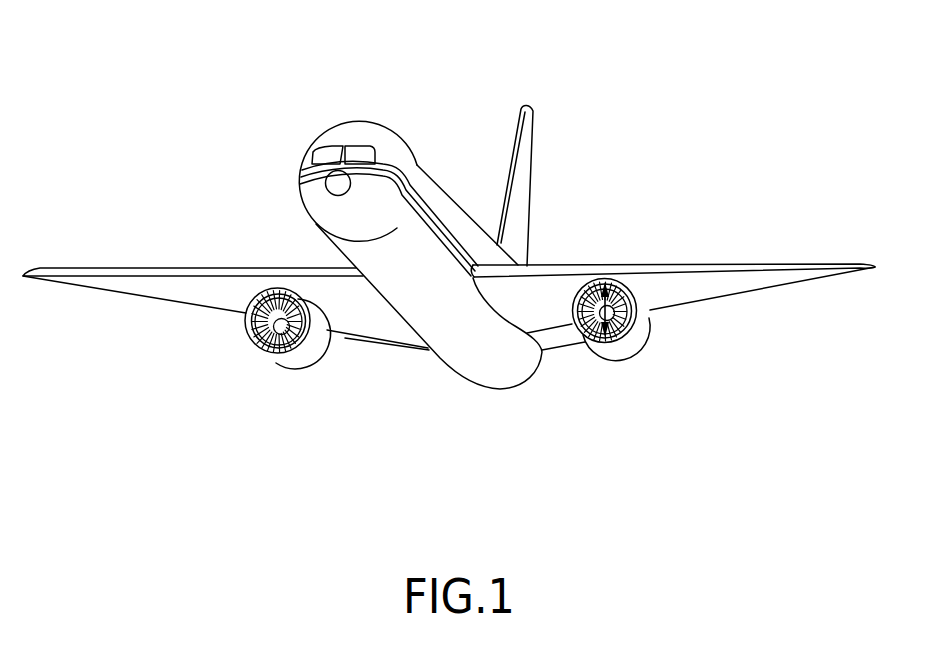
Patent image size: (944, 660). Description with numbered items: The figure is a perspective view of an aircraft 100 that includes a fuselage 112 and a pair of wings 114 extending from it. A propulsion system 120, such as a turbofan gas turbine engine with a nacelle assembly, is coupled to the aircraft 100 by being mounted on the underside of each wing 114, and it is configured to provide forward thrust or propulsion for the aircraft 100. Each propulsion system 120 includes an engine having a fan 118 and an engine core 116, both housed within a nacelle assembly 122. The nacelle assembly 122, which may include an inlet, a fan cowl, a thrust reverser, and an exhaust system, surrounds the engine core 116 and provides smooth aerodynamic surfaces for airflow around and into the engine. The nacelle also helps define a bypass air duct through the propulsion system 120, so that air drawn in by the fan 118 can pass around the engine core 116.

The aircraft 100 is at (209, 101).
The fuselage 112 is at (432, 188).
The wings 114 is at (117, 267).
The engine core 116 is at (310, 340).
The fan 118 is at (251, 340).
The propulsion system 120 is at (289, 360).
The nacelle assembly 122 is at (313, 342).